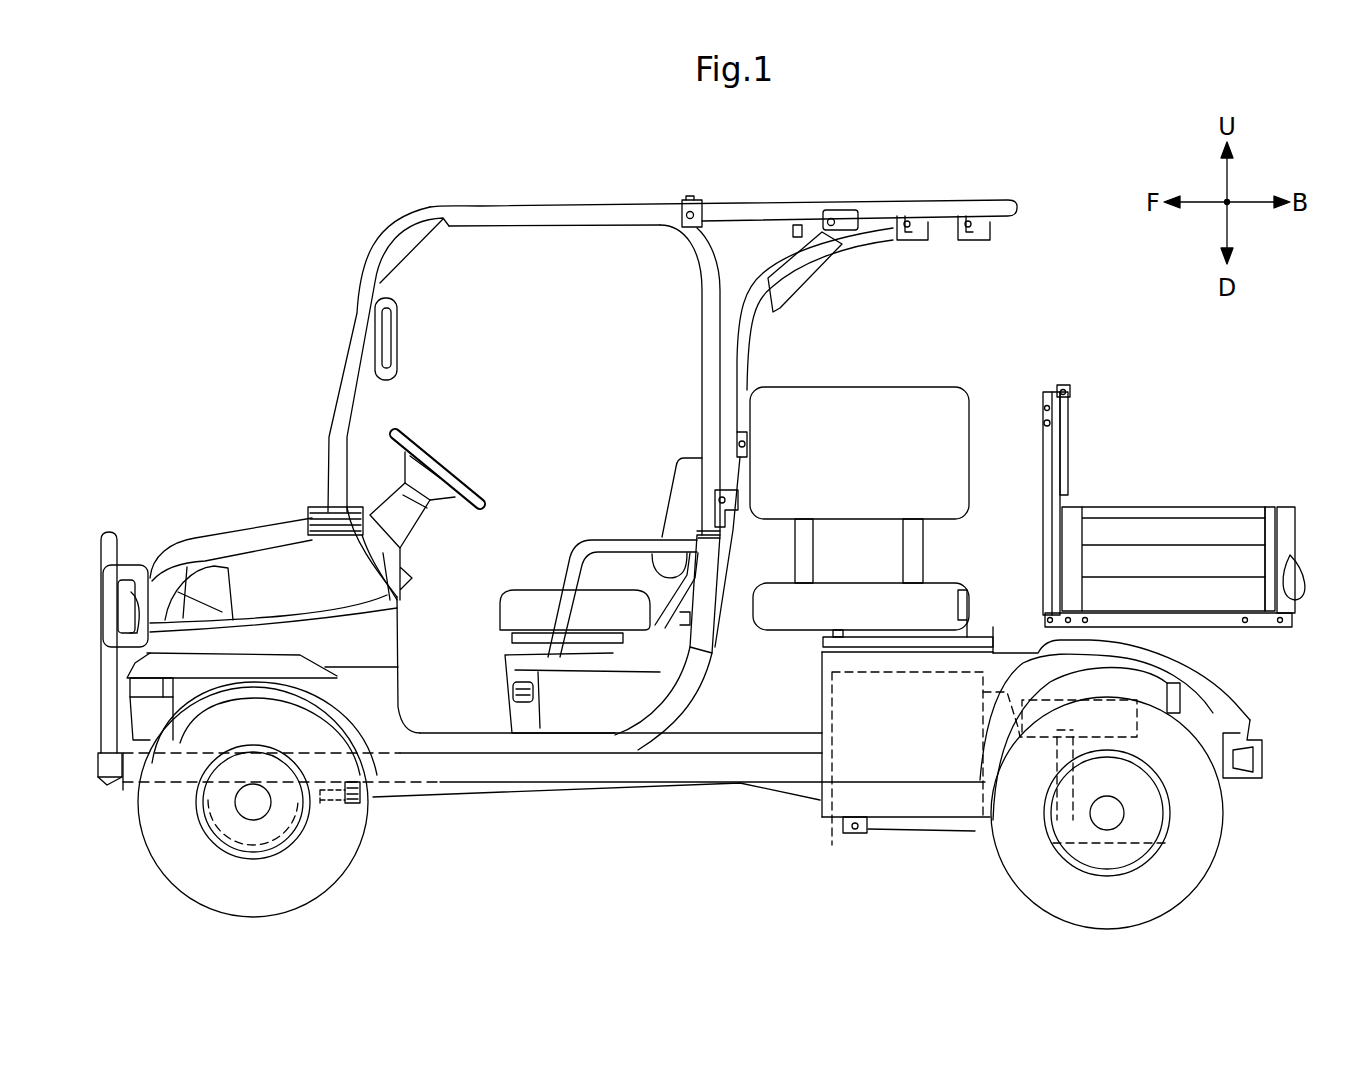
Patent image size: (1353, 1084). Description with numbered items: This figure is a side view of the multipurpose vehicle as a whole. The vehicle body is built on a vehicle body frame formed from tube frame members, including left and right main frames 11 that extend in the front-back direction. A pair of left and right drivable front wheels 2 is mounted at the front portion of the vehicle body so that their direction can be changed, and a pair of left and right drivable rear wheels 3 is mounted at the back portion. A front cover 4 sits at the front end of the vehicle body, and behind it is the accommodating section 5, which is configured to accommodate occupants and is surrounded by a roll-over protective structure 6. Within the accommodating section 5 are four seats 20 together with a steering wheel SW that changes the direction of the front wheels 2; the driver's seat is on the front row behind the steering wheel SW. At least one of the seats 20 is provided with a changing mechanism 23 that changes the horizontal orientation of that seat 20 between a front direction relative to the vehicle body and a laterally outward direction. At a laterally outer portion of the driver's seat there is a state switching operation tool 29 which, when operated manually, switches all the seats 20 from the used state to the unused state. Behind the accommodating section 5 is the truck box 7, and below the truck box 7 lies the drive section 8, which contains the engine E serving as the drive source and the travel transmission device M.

The front wheels 2 is at (325, 880).
The rear wheels 3 is at (1197, 870).
The front cover 4 is at (215, 540).
The accommodating section 5 is at (1012, 282).
The roll-over protective structure (ROPS) 6 is at (610, 200).
The truck box 7 is at (1190, 493).
The drive section 8 is at (908, 868).
The main frames 11 is at (536, 772).
The seats 20 is at (672, 462).
The changing mechanism 23 is at (985, 612).
The state switching operation tool 29 is at (497, 698).
The steering wheel SW is at (402, 433).
The engine E is at (797, 780).
The travel transmission device M is at (1030, 823).